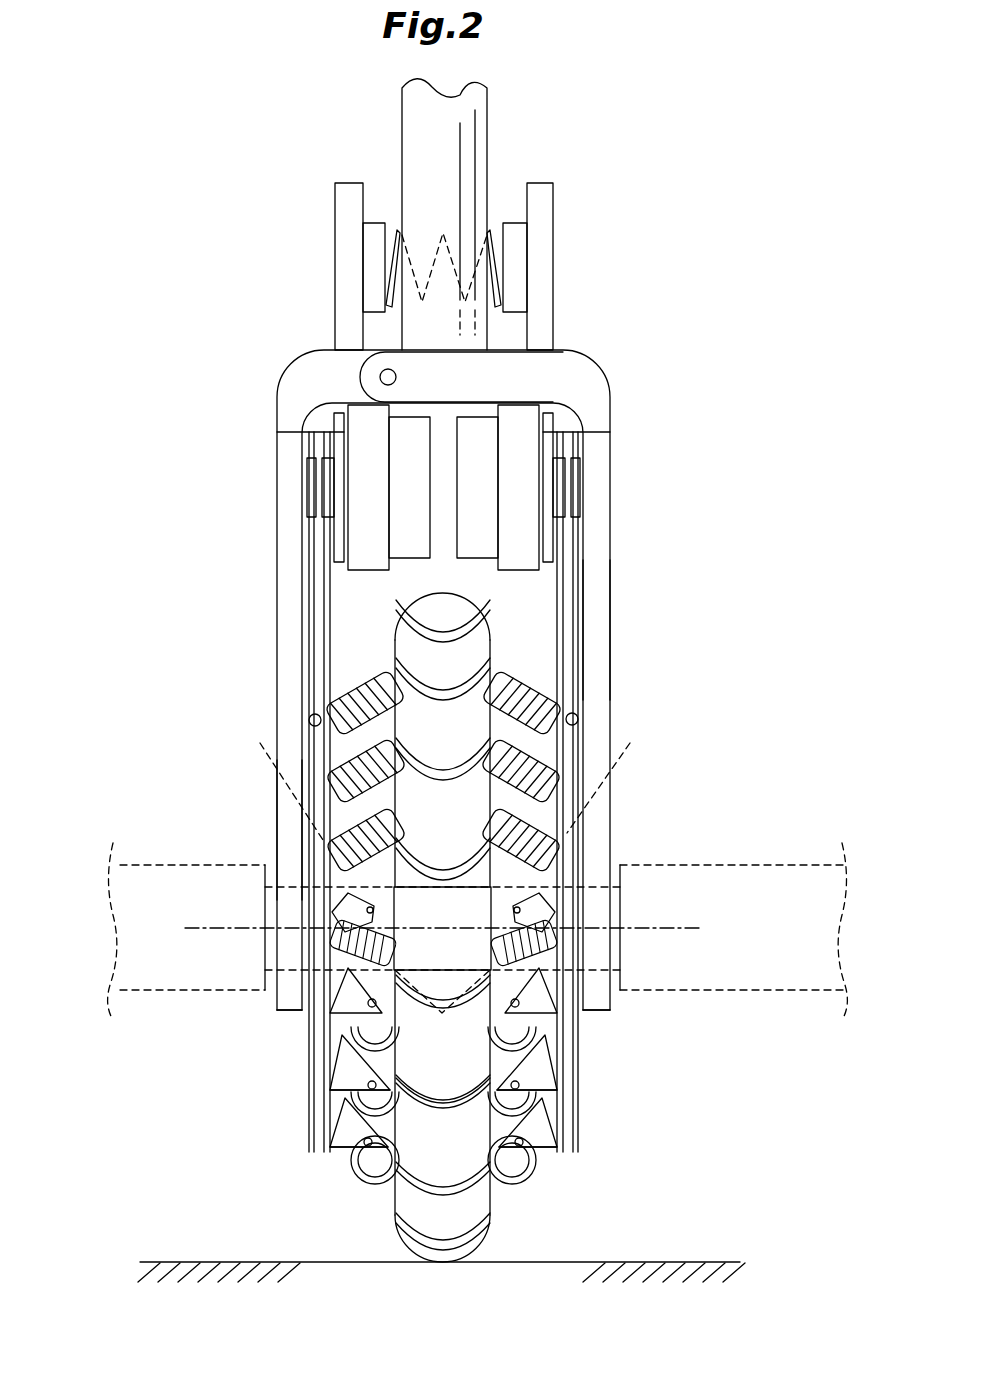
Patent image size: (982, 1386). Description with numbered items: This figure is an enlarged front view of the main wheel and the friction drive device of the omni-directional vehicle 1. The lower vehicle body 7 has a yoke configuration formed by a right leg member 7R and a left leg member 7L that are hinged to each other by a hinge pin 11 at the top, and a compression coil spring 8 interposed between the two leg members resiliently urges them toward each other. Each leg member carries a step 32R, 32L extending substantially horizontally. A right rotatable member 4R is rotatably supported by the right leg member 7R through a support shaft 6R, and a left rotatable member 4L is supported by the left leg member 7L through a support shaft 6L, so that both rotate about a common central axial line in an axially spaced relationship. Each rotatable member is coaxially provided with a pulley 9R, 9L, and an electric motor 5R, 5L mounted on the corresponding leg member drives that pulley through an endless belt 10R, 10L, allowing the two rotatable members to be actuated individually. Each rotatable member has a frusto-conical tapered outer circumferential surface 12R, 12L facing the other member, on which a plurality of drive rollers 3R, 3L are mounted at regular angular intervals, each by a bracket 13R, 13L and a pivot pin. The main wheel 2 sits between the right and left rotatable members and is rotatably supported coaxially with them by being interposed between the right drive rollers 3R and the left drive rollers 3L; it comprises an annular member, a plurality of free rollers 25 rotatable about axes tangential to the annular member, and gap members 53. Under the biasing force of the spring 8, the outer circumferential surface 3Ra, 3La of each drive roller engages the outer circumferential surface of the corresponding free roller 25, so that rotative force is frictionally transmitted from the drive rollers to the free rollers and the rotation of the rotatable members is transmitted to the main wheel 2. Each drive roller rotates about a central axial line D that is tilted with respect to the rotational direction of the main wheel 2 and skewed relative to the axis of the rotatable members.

The omni-directional vehicle 1 is at (641, 506).
The main wheel 2 is at (494, 1236).
The right drive rollers 3R is at (357, 697).
The left drive rollers 3L is at (533, 680).
The outer circumferential surface of right drive roller 3Ra is at (353, 953).
The outer circumferential surface of left drive roller 3La is at (550, 953).
The right rotatable member 4R is at (339, 1038).
The left rotatable member 4L is at (549, 1046).
The right electric motor 5R is at (403, 448).
The left electric motor 5L is at (483, 462).
The right support shaft 6R is at (293, 970).
The left support shaft 6L is at (597, 970).
The lower vehicle body 7 is at (448, 670).
The right leg member 7R is at (278, 830).
The left leg member 7L is at (602, 610).
The compression coil spring 8 is at (490, 230).
The right pulley 9R is at (303, 705).
The left pulley 9L is at (577, 700).
The right endless belt 10R is at (318, 623).
The left endless belt 10L is at (567, 587).
The hinge pin 11 is at (380, 375).
The frusto-conical tapered outer circumferential surface of right rotatable member 12R is at (333, 900).
The frusto-conical tapered outer circumferential surface of left rotatable member 12L is at (550, 900).
The right bracket 13R is at (358, 1135).
The left bracket 13L is at (535, 1125).
The free rollers 25 is at (430, 1037).
The right step 32R is at (137, 863).
The left step 32L is at (770, 863).
The gap members 53 is at (437, 1087).
The central axial line of drive roller D is at (446, 778).